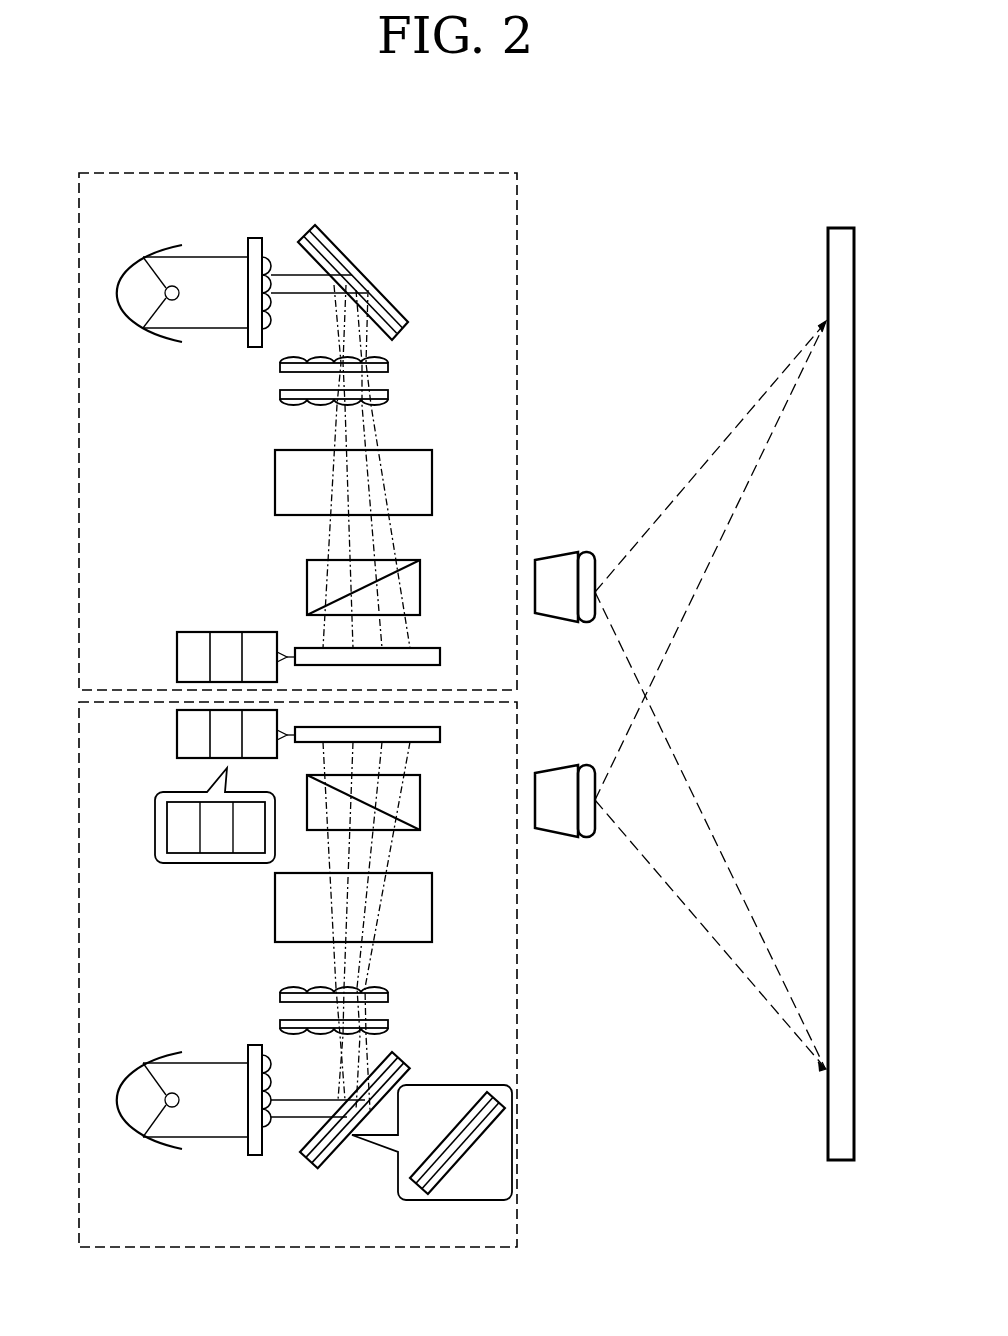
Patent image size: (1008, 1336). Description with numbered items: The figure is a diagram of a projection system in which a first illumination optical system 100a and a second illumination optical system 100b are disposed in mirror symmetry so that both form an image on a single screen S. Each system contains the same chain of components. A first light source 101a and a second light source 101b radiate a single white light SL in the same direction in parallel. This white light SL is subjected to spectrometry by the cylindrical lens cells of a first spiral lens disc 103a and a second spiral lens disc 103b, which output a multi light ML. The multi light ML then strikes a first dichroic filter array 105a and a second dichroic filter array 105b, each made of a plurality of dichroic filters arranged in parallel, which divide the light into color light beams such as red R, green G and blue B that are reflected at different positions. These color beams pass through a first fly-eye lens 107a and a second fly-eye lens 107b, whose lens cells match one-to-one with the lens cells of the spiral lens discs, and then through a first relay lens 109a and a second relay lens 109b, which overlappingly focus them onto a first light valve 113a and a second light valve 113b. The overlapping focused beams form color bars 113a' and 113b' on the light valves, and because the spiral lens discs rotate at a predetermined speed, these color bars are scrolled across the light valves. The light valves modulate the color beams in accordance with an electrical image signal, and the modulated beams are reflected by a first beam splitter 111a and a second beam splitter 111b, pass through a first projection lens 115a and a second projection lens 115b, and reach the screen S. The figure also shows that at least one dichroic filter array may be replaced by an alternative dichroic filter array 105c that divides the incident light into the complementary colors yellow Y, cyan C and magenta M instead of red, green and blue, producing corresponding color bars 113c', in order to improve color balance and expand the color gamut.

The first illumination optical system 100a is at (517, 257).
The second illumination optical system 100b is at (517, 1010).
The first light source 101a is at (130, 330).
The second light source 101b is at (137, 1070).
The first spiral lens disc 103a is at (250, 348).
The second spiral lens disc 103b is at (250, 1045).
The first dichroic filter array 105a is at (347, 256).
The second dichroic filter array 105b is at (407, 1070).
The dichroic filter array for yellow, cyan and magenta 105c is at (458, 1170).
The first fly-eye lens 107a is at (388, 370).
The second fly-eye lens 107b is at (388, 1022).
The first relay lens 109a is at (425, 488).
The second relay lens 109b is at (425, 902).
The first beam splitter 111a is at (420, 587).
The second beam splitter 111b is at (420, 803).
The first light valve 113a is at (401, 658).
The second light valve 113b is at (402, 736).
The color bars on first light valve 113a' is at (195, 657).
The color bars on second light valve 113b' is at (195, 734).
The yellow, cyan and magenta color bars 113c' is at (205, 839).
The first projection lens 115a is at (560, 560).
The second projection lens 115b is at (560, 837).
The screen S is at (840, 238).
The single white light SL is at (213, 255).
The multi light ML is at (288, 272).
The red R is at (393, 338).
The green G is at (395, 317).
The blue B is at (382, 295).
The yellow Y is at (488, 1093).
The cyan C is at (503, 1108).
The magenta M is at (483, 1125).